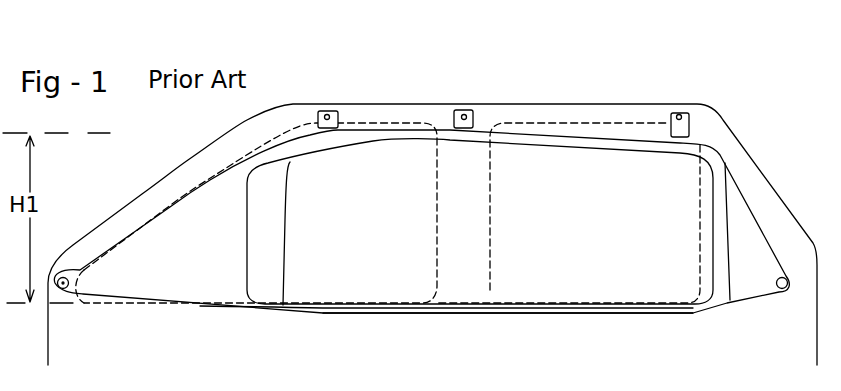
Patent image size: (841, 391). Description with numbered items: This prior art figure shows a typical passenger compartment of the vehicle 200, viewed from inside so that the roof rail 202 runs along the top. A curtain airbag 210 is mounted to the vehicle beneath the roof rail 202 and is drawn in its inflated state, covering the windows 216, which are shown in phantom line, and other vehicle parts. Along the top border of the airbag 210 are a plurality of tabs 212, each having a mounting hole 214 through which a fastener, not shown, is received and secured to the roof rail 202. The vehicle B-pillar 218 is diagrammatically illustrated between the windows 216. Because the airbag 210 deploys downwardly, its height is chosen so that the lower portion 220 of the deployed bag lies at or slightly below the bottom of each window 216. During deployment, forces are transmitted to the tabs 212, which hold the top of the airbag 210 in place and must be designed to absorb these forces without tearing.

The vehicle 200 is at (504, 111).
The roof rail 202 is at (603, 113).
The curtain airbag 210 is at (717, 150).
The tabs 212 is at (338, 120).
The mounting hole 214 is at (322, 115).
The windows 216 is at (198, 183).
The B-pillar 218 is at (467, 248).
The lower portion 220 is at (620, 313).